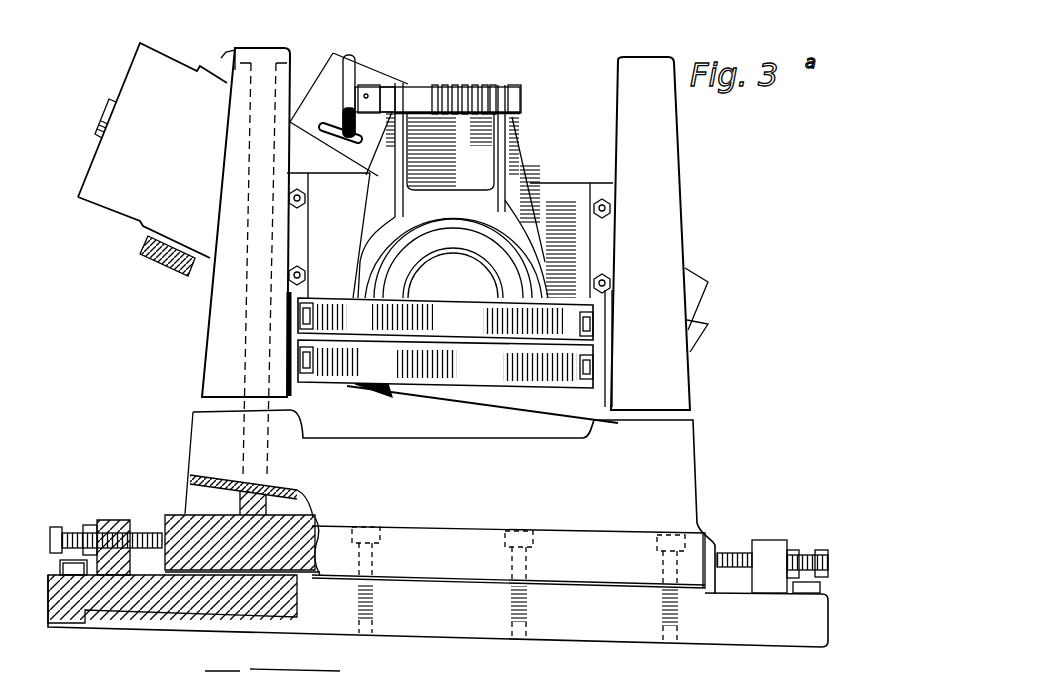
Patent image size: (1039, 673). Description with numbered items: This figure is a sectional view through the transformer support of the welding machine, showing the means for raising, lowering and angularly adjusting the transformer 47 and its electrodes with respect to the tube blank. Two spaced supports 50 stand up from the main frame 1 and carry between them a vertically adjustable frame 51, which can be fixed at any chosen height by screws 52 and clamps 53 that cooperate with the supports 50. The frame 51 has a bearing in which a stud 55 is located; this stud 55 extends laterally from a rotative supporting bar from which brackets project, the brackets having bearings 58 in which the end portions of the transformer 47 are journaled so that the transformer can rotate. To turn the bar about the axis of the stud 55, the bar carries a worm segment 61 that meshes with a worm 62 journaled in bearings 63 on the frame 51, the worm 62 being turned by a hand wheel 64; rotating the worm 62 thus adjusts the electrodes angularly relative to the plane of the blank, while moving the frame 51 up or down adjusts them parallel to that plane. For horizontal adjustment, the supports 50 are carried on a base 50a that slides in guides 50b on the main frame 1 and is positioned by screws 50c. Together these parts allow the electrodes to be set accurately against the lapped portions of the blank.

The main frame 1 is at (225, 600).
The transformer 47 is at (325, 82).
The supports 50 is at (217, 300).
The base 50a is at (480, 525).
The guides 50b is at (605, 548).
The screws 50c is at (754, 514).
The vertically adjustable frame 51 is at (510, 160).
The screws 52 is at (600, 211).
The clamps 53 is at (600, 181).
The stud 55 is at (472, 257).
The bearings 58 is at (135, 193).
The worm segment 61 is at (457, 113).
The worm 62 is at (458, 87).
The bearings 63 is at (503, 88).
The hand wheel 64 is at (352, 64).